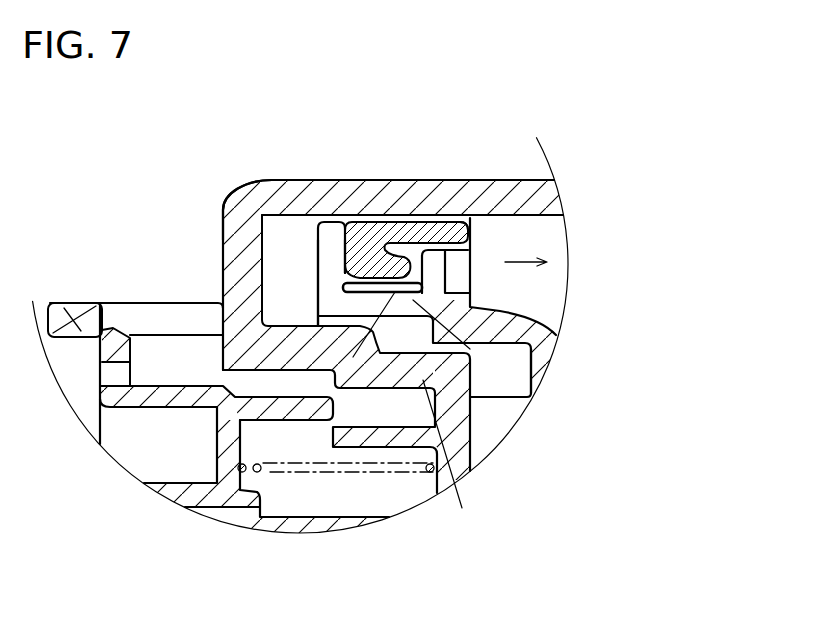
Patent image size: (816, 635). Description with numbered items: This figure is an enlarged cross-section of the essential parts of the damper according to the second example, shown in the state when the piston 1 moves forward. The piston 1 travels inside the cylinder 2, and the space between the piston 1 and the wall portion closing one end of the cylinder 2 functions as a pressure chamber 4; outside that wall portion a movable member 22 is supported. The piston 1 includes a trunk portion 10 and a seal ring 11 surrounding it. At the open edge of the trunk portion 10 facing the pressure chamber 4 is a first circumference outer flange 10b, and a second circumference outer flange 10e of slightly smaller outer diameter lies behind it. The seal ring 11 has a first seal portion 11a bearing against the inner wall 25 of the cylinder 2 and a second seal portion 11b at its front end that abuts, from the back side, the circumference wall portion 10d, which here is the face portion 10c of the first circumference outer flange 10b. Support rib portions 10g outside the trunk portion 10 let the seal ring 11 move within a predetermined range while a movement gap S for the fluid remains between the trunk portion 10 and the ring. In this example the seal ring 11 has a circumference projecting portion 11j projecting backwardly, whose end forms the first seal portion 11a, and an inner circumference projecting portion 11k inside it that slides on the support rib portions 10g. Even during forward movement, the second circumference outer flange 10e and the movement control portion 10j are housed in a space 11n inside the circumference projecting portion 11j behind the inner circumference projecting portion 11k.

The piston 1 is at (540, 358).
The cylinder 2 is at (517, 178).
The pressure chamber 4 is at (282, 225).
The trunk portion 10 is at (373, 289).
The first circumference outer flange 10b is at (327, 218).
The face portion 10c is at (338, 254).
The circumference wall portion 10d is at (338, 254).
The second circumference outer flange 10e is at (476, 250).
The support rib portions 10g is at (353, 357).
The movement control portion 10j is at (435, 267).
The seal ring 11 is at (377, 217).
The first seal portion 11a is at (451, 222).
The second seal portion 11b is at (345, 248).
The circumference projecting portion 11j is at (432, 247).
The inner circumference projecting portion 11k is at (457, 250).
The space 11n is at (440, 282).
The movable member 22 is at (140, 443).
The inner wall 25 is at (558, 227).
The movement gap S is at (410, 307).